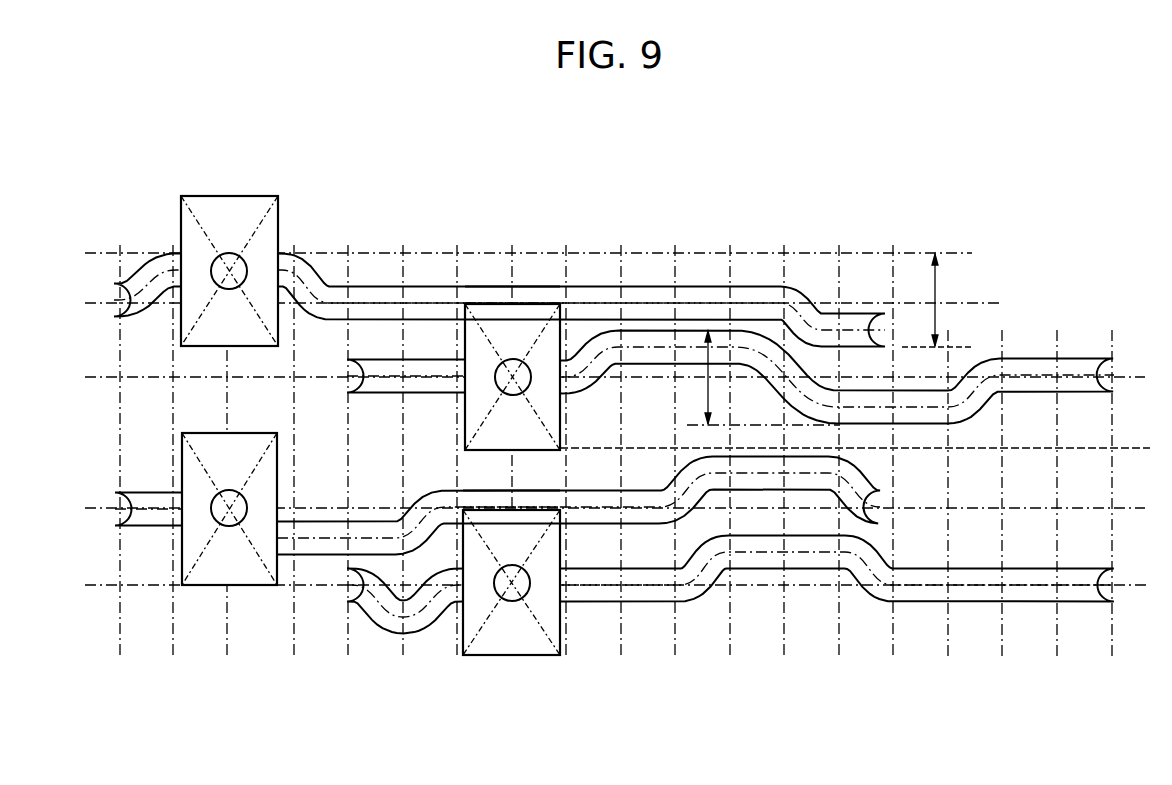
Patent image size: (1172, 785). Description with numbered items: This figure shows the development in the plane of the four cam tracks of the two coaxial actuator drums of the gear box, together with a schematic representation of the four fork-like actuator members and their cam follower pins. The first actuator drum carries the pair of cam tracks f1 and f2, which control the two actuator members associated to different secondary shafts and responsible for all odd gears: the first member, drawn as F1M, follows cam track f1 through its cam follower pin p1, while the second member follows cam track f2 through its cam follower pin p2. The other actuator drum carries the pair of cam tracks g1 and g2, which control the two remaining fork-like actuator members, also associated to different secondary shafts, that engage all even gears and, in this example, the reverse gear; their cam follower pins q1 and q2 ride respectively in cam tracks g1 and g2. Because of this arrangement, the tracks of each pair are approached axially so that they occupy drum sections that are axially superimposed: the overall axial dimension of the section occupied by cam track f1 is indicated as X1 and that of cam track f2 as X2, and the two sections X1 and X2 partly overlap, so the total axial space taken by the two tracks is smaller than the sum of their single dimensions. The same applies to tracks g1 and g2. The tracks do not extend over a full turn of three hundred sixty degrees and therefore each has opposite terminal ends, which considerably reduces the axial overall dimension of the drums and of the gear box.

The fork-like actuator member F1M is at (233, 207).
The cam follower pin p1 is at (211, 270).
The cam track f1 is at (367, 297).
The cam follower pin p2 is at (510, 360).
The axial dimension X1 is at (937, 288).
The cam track f2 is at (377, 383).
The axial dimension X2 is at (707, 385).
The cam track g2 is at (860, 488).
The cam track g1 is at (1023, 576).
The cam follower pin q2 is at (229, 530).
The cam follower pin q1 is at (530, 597).